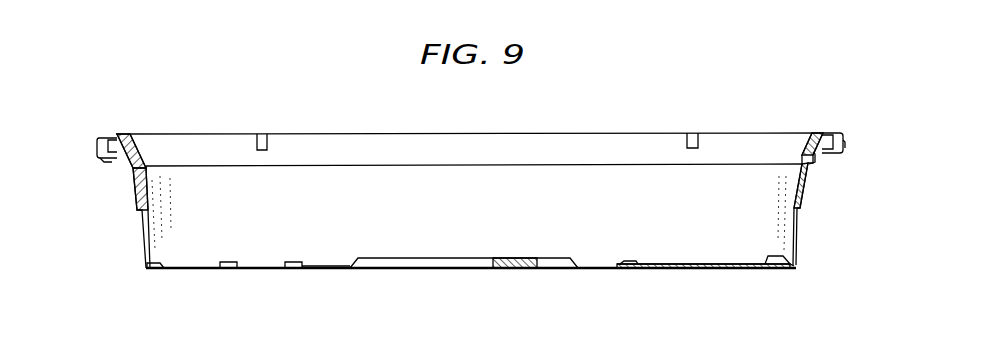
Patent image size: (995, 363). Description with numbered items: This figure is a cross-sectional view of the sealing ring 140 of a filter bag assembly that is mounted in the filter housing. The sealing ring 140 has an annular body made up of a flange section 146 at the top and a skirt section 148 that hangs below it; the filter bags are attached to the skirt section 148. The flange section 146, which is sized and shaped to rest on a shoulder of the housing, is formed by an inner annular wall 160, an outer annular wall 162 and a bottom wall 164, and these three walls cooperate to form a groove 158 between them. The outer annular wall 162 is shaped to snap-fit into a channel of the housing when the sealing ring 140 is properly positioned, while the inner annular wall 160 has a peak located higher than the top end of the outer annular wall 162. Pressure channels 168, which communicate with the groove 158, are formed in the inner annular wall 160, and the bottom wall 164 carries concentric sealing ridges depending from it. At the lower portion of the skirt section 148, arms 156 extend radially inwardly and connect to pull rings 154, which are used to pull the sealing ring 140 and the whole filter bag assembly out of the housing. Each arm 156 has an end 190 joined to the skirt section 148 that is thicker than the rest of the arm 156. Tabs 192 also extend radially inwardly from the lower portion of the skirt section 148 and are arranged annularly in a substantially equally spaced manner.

The sealing ring 140 is at (160, 116).
The flange section 146 is at (404, 133).
The skirt section 148 is at (807, 198).
The pull rings 154 is at (392, 257).
The arms 156 is at (680, 271).
The groove 158 is at (106, 142).
The inner annular wall 160 is at (804, 140).
The outer annular wall 162 is at (846, 142).
The bottom wall 164 is at (110, 158).
The pressure channels 168 is at (268, 141).
The end 190 is at (790, 256).
The tabs 192 is at (222, 271).